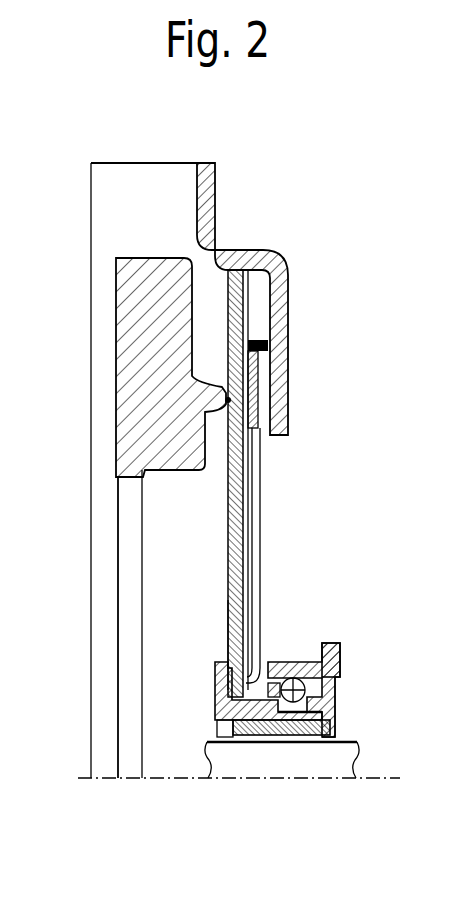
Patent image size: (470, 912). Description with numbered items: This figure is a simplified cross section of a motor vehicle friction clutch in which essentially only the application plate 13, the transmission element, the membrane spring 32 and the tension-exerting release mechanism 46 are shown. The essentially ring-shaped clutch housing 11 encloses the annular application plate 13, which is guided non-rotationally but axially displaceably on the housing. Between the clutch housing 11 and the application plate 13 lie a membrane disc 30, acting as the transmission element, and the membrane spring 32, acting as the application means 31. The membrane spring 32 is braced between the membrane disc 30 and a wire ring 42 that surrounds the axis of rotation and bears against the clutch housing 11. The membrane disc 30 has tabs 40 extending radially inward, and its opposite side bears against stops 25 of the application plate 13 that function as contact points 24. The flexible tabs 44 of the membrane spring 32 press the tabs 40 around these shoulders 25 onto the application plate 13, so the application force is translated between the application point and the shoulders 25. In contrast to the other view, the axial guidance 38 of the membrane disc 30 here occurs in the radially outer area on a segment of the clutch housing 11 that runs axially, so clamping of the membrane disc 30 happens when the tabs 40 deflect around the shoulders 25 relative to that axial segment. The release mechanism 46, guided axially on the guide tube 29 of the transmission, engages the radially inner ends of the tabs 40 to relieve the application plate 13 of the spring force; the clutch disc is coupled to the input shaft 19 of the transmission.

The clutch housing 11 is at (207, 188).
The axial guidance 38 is at (240, 257).
The application plate 13 is at (130, 267).
The stops 25 is at (226, 400).
The wire ring 42 is at (266, 346).
The contact points 24 is at (254, 396).
The guide tube 29 is at (250, 463).
The membrane disc 30 is at (238, 503).
The membrane spring 32 is at (253, 541).
The application means 31 is at (263, 583).
The tabs 40 is at (228, 612).
The flexible tabs 44 is at (258, 623).
The release mechanism 46 is at (344, 658).
The input shaft 19 is at (343, 760).